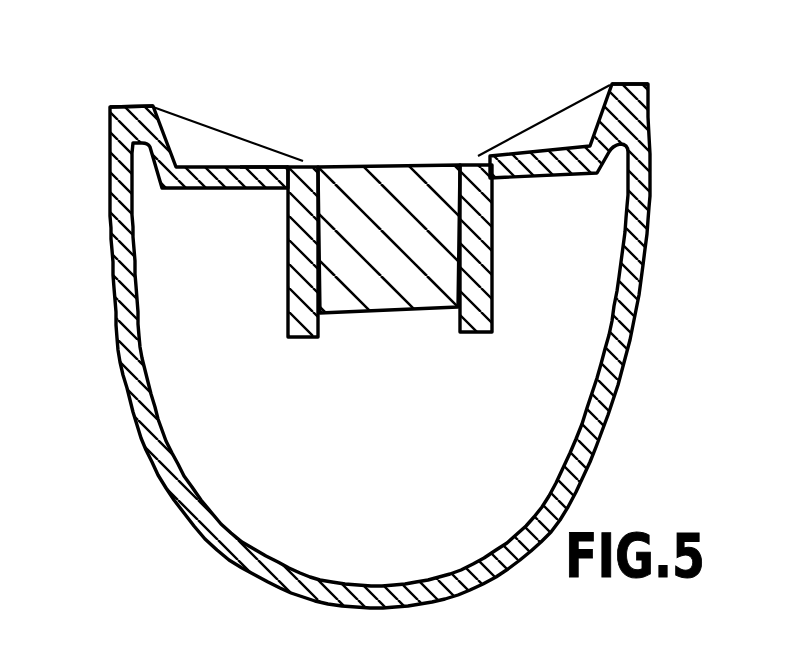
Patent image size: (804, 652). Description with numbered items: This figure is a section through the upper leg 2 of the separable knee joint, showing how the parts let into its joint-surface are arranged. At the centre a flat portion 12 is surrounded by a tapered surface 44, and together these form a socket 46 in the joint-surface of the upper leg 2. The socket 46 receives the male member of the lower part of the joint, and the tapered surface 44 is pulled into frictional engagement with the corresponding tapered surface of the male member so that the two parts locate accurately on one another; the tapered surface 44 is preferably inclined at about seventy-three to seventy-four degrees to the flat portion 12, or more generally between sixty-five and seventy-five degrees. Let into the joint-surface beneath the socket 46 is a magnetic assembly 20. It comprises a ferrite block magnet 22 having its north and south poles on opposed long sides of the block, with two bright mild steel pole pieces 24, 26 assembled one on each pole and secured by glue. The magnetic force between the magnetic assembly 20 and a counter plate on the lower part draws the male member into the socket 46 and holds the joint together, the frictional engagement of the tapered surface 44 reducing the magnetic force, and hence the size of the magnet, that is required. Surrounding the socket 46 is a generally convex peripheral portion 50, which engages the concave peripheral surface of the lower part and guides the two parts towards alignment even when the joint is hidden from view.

The upper leg 2 is at (123, 340).
The flat portion 12 is at (272, 156).
The magnetic assembly 20 is at (390, 233).
The ferrite block magnet 22 is at (358, 170).
The pole piece 24 is at (476, 300).
The pole piece 26 is at (300, 298).
The tapered surface 44 is at (181, 131).
The socket 46 is at (239, 118).
The peripheral portion 50 is at (121, 107).